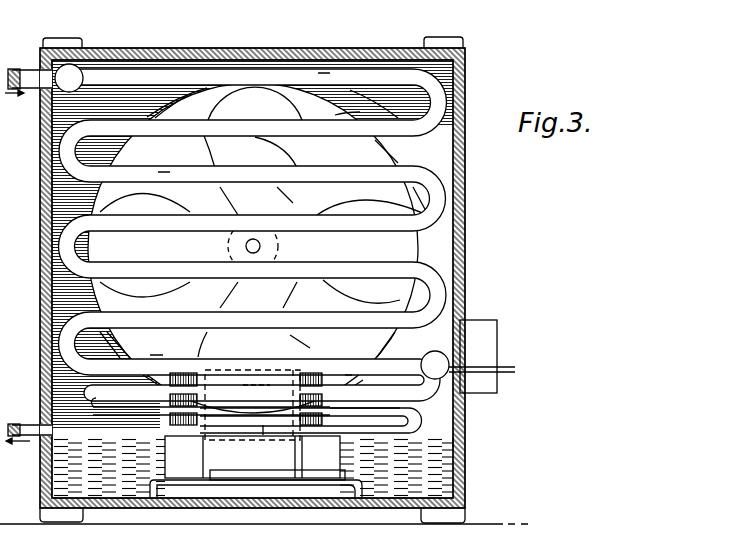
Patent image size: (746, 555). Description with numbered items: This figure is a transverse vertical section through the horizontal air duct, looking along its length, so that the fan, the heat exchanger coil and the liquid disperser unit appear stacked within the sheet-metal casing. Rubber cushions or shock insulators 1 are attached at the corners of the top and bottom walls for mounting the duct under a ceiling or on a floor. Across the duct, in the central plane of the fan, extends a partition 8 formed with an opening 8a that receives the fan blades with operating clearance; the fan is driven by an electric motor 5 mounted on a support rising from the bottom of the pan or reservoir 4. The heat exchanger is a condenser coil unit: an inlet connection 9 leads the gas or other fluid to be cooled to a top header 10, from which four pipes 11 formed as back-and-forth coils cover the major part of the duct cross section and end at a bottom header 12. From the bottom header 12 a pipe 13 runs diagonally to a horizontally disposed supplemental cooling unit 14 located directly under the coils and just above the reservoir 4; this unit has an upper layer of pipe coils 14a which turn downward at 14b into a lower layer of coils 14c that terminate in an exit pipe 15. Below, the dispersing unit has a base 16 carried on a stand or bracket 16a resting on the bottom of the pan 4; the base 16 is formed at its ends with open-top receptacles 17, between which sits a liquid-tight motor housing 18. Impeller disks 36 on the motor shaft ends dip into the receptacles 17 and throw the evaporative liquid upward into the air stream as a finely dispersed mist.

The cushions or shock insulators 1 is at (55, 40).
The pan or reservoir 4 is at (58, 473).
The electric motor 5 is at (283, 209).
The partition 8 is at (435, 152).
The opening 8a is at (335, 115).
The inlet connection 9 is at (23, 70).
The top header 10 is at (63, 87).
The pipes 11 is at (318, 73).
The bottom header 12 is at (474, 356).
The pipe 13 is at (223, 390).
The supplemental heat exchanger or cooling unit 14 is at (424, 419).
The upper layer of pipe coils 14a is at (400, 411).
The downward connection 14b is at (450, 437).
The lower layer of coils 14c is at (263, 437).
The exit pipe 15 is at (30, 420).
The base 16 is at (273, 468).
The stand or bracket 16a is at (152, 493).
The receptacles 17 is at (203, 447).
The motor housing 18 is at (243, 382).
The disks 36 is at (348, 373).